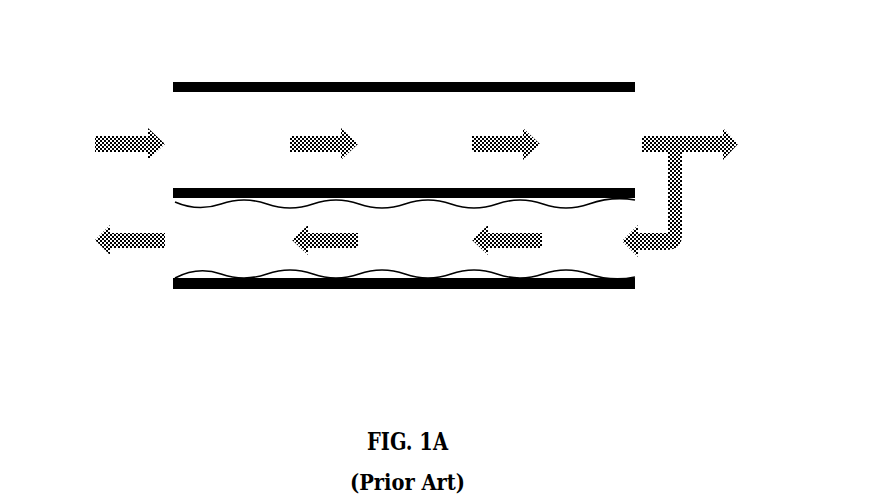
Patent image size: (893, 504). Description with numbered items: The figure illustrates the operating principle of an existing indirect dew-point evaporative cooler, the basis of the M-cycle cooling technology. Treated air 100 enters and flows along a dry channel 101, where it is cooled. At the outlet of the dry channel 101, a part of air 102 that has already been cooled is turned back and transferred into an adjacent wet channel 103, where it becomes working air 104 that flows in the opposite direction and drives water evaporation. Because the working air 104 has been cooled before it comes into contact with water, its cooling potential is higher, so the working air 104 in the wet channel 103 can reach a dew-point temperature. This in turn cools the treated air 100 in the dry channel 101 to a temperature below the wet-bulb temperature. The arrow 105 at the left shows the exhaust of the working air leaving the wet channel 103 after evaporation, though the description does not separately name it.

The treated air 100 is at (92, 143).
The dry channel 101 is at (253, 124).
The part of air 102 is at (722, 138).
The wet channel 103 is at (249, 238).
The working air 104 is at (677, 216).
The permeate outlet flow 105 is at (92, 243).